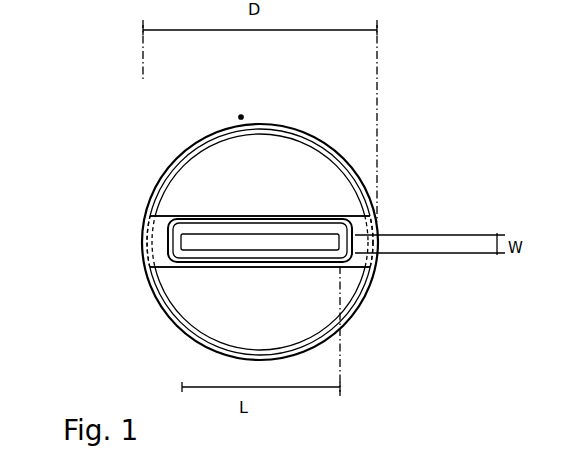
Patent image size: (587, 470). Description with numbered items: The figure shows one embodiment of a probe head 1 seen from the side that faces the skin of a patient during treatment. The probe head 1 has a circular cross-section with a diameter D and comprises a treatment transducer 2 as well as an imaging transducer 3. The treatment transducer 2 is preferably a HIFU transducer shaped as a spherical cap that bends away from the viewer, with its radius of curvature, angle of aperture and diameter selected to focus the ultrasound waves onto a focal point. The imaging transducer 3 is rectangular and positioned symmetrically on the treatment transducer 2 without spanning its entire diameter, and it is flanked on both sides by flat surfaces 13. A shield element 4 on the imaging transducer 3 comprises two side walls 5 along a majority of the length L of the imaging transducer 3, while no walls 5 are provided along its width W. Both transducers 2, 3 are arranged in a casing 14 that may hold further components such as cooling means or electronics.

The probe head 1 is at (94, 146).
The treatment transducer 2 is at (323, 181).
The imaging transducer 3 is at (354, 244).
The shield element 4 is at (158, 237).
The side walls 5 is at (200, 216).
The flat surfaces 13 is at (153, 256).
The casing 14 is at (241, 114).